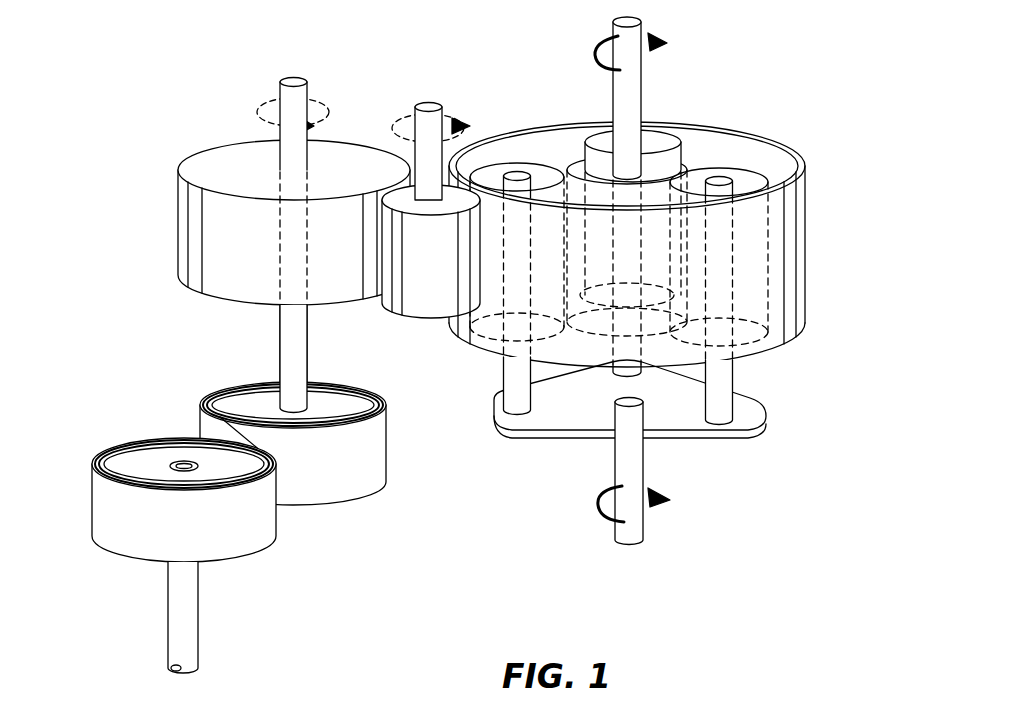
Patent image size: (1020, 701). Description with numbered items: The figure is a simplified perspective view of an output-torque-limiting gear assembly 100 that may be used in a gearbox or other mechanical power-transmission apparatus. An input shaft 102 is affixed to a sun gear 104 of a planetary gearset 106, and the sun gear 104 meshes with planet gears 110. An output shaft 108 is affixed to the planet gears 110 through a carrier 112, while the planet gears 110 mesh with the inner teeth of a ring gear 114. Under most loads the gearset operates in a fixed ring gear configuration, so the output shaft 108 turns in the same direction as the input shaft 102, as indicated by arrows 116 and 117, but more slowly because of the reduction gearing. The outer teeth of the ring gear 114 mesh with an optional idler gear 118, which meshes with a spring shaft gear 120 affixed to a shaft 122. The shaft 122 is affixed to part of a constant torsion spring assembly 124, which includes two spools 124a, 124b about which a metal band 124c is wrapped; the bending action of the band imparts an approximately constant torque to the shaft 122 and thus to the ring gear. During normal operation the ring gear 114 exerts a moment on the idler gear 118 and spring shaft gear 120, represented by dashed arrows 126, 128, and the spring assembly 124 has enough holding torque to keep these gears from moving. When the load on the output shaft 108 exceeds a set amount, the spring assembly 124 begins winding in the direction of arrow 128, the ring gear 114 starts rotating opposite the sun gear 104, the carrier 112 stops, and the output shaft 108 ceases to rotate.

The output-torque-limiting gear assembly 100 is at (120, 52).
The input shaft 102 is at (643, 63).
The sun gear 104 is at (558, 128).
The planetary gearset 106 is at (822, 113).
The output shaft 108 is at (646, 528).
The planet gears 110 is at (716, 145).
The carrier 112 is at (768, 416).
The ring gear 114 is at (462, 348).
The arrow 116 is at (612, 42).
The arrow 117 is at (600, 502).
The idler gear 118 is at (402, 305).
The spring shaft gear 120 is at (207, 160).
The shaft 122 is at (280, 309).
The constant torsion spring assembly 124 is at (288, 606).
The spool 124a is at (145, 458).
The spool 124b is at (331, 400).
The metal band 124c is at (320, 492).
The dashed arrow 126 is at (406, 135).
The dashed arrow 128 is at (268, 110).